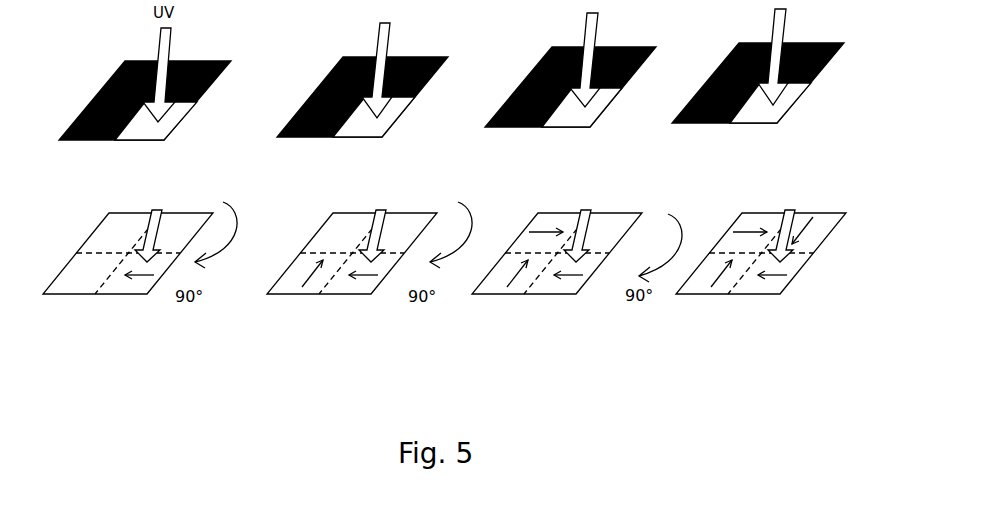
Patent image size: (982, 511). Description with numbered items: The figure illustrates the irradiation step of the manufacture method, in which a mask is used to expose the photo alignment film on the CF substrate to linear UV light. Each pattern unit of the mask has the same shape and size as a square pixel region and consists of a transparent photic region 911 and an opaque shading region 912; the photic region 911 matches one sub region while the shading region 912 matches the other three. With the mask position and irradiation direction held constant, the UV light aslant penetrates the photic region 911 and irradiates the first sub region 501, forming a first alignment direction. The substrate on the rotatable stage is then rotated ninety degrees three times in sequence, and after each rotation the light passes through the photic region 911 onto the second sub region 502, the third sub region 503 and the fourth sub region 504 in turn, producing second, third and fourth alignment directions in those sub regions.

The first sub region 501 is at (137, 287).
The second sub region 502 is at (188, 220).
The third sub region 503 is at (102, 240).
The fourth sub region 504 is at (63, 285).
The photic region 911 is at (173, 113).
The shading region 912 is at (220, 78).